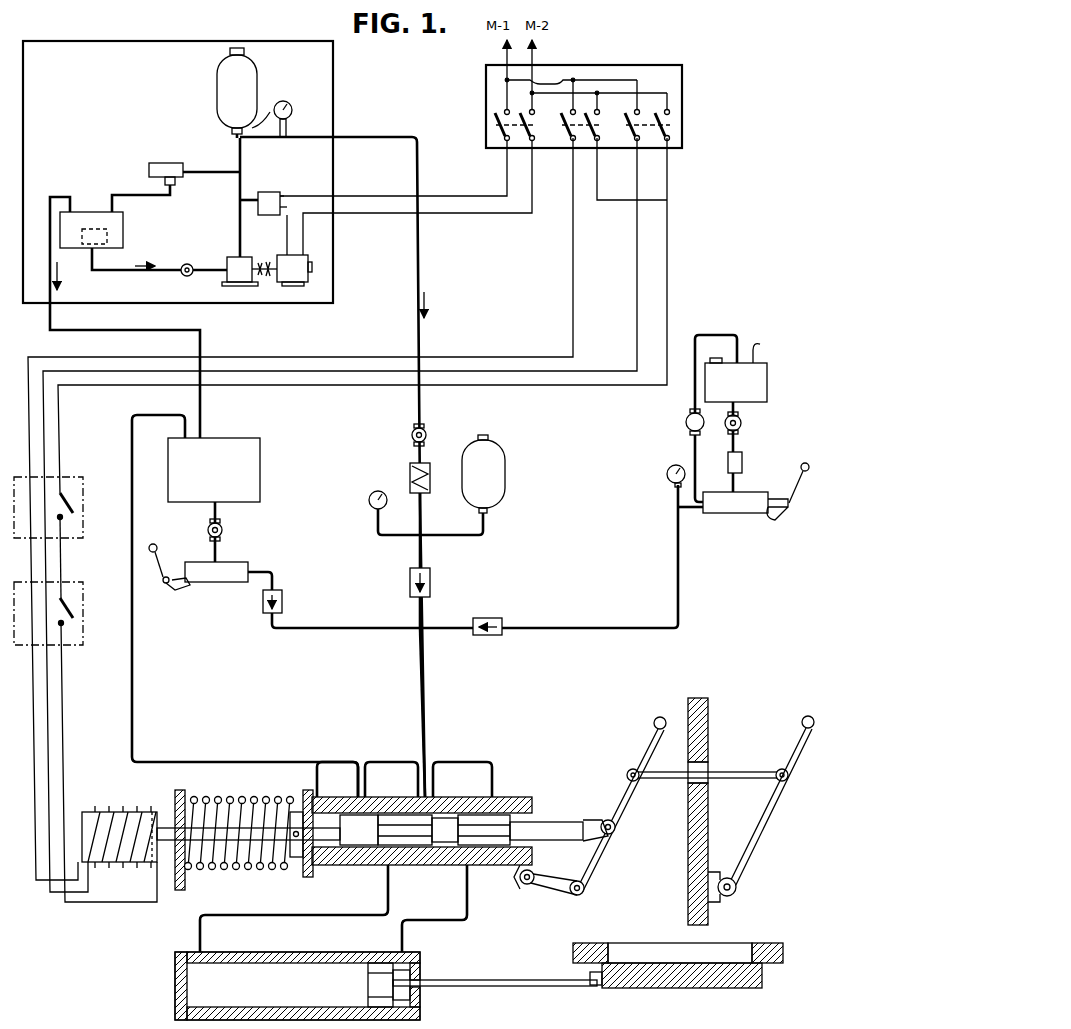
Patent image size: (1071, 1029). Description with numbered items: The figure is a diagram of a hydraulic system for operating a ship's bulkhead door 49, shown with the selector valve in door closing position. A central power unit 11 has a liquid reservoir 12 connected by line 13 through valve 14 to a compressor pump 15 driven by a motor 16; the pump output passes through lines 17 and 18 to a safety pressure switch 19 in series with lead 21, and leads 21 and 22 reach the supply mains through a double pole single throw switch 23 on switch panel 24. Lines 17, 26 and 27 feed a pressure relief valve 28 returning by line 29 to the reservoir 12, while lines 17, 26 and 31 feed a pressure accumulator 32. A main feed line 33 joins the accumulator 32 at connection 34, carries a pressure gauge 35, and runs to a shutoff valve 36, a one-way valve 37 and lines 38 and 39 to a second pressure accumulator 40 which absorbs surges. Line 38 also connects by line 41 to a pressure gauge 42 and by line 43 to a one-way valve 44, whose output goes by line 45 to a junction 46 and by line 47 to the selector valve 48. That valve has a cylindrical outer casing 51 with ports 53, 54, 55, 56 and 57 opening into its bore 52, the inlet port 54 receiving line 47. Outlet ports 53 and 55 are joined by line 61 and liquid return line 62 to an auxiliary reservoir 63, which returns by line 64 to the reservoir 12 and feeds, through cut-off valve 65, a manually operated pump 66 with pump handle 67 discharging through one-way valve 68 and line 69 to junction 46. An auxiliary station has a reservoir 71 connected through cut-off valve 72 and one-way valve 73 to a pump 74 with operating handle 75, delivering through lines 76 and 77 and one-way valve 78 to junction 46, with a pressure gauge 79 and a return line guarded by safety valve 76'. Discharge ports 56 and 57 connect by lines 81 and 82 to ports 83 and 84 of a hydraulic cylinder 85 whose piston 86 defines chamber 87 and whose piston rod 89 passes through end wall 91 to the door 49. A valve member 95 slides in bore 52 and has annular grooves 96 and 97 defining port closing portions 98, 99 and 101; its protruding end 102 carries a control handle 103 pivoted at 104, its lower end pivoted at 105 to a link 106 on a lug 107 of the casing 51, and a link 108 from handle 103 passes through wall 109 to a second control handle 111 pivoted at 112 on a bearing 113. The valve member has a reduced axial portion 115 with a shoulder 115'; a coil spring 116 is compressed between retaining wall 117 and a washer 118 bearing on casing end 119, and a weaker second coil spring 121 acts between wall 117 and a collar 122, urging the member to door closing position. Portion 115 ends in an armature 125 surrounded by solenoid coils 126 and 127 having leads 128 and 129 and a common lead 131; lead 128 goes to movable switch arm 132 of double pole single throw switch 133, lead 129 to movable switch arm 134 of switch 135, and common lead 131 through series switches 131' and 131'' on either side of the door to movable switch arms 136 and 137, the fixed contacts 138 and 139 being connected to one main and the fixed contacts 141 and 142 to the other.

The central power unit 11 is at (336, 101).
The liquid reservoir 12 is at (89, 211).
The line 13 is at (120, 278).
The valve 14 is at (182, 278).
The compressor pump 15 is at (228, 262).
The motor 16 is at (300, 275).
The line 17 is at (237, 226).
The line 18 is at (256, 196).
The safety pressure switch 19 is at (278, 193).
The lead 21 is at (368, 195).
The lead 22 is at (372, 214).
The double pole single throw switch 23 is at (495, 128).
The switch panel 24 is at (681, 66).
The line 26 is at (237, 192).
The line 27 is at (205, 171).
The pressure relief valve 28 is at (162, 163).
The line 29 is at (128, 194).
The line 31 is at (236, 150).
The pressure accumulator 32 is at (217, 88).
The main feed line 33 is at (387, 137).
The connection 34 is at (258, 120).
The pressure gauge 35 is at (292, 112).
The shutoff valve 36 is at (427, 432).
The one-way valve 37 is at (409, 473).
The line 38 is at (423, 513).
The line 39 is at (445, 540).
The pressure accumulator 40 is at (497, 488).
The line 41 is at (377, 528).
The pressure gauge 42 is at (369, 500).
The line 43 is at (418, 554).
The one-way valve 44 is at (410, 583).
The line 45 is at (418, 607).
The junction 46 is at (418, 632).
The line 47 is at (427, 667).
The selector valve 48 is at (520, 797).
The bulkhead door 49 is at (758, 985).
The outer casing 51 is at (548, 820).
The bore 52 is at (487, 866).
The port 53 is at (380, 795).
The liquid inlet port 54 is at (428, 795).
The port 55 is at (507, 795).
The discharge port 56 is at (380, 866).
The discharge port 57 is at (458, 866).
The line 61 is at (478, 760).
The liquid return line 62 is at (337, 762).
The auxiliary reservoir 63 is at (261, 442).
The liquid return line 64 is at (208, 330).
The cut-off valve 65 is at (223, 530).
The manually operated pump 66 is at (220, 584).
The pump handle 67 is at (160, 552).
The one-way valve 68 is at (283, 601).
The line 69 is at (322, 630).
The reservoir 71 is at (757, 382).
The cut-off valve 72 is at (742, 423).
The one-way valve 73 is at (742, 460).
The pump 74 is at (745, 514).
The operating handle 75 is at (796, 482).
The line 76 is at (697, 529).
The safety valve 76' is at (695, 418).
The line 77 is at (677, 546).
The one-way valve 78 is at (485, 618).
The pressure gauge 79 is at (667, 474).
The line 81 is at (245, 915).
The line 82 is at (466, 905).
The port 83 is at (196, 950).
The port 84 is at (400, 947).
The hydraulic cylinder 85 is at (297, 952).
The piston 86 is at (366, 980).
The chamber 87 is at (210, 986).
The piston rod 89 is at (475, 980).
The end wall 91 is at (414, 996).
The valve member 95 is at (578, 828).
The annular groove 96 is at (404, 797).
The annular groove 97 is at (476, 816).
The port closing portion 98 is at (352, 797).
The port closing portion 99 is at (446, 816).
The port closing portion 101 is at (556, 820).
The end of valve member 102 is at (592, 838).
The control handle 103 is at (630, 801).
The pivot connection 104 is at (616, 830).
The pivot connection 105 is at (585, 895).
The link 106 is at (548, 890).
The lug 107 is at (516, 884).
The link 108 is at (745, 772).
The wall 109 is at (708, 703).
The control handle 111 is at (756, 826).
The pivot mounting 112 is at (737, 887).
The bearing 113 is at (719, 897).
The reduced axial portion 115 is at (239, 818).
The shoulder 115' is at (321, 889).
The coil spring 116 is at (210, 796).
The retaining wall 117 is at (181, 790).
The washer 118 is at (306, 795).
The end of casing 119 is at (311, 795).
The second coil spring 121 is at (235, 868).
The collar or stop 122 is at (292, 860).
The armature 125 is at (88, 811).
The coil 126 is at (112, 811).
The coil 127 is at (140, 826).
The lead 128 is at (80, 896).
The lead 129 is at (36, 884).
The common lead 131 is at (119, 876).
The single pole single throw switch 131' is at (64, 598).
The single pole single throw switch 131'' is at (65, 492).
The movable switch arm 132 is at (640, 142).
The double pole single throw switch 133 is at (668, 125).
The movable switch arm 134 is at (572, 142).
The double pole single throw switch 135 is at (553, 124).
The movable switch arm 136 is at (670, 141).
The movable switch arm 137 is at (580, 152).
The fixed contact 138 is at (669, 92).
The fixed contact 139 is at (581, 106).
The fixed contact 141 is at (660, 110).
The fixed contact 142 is at (605, 106).